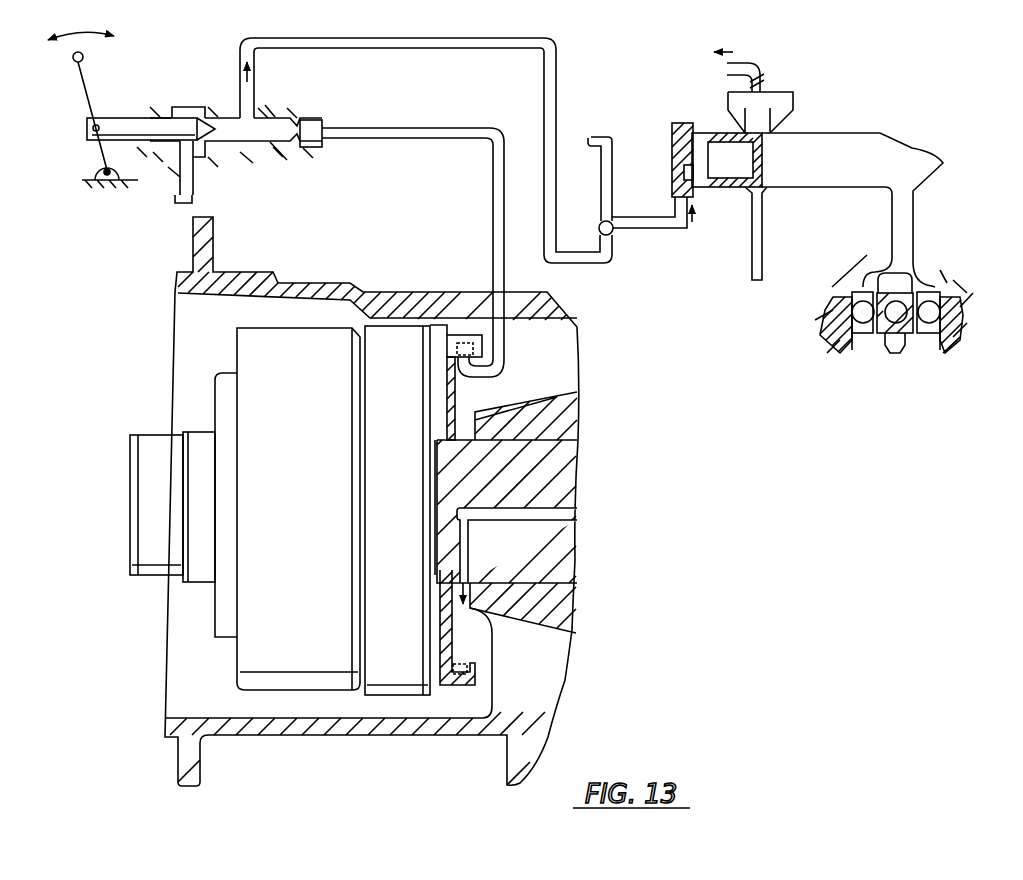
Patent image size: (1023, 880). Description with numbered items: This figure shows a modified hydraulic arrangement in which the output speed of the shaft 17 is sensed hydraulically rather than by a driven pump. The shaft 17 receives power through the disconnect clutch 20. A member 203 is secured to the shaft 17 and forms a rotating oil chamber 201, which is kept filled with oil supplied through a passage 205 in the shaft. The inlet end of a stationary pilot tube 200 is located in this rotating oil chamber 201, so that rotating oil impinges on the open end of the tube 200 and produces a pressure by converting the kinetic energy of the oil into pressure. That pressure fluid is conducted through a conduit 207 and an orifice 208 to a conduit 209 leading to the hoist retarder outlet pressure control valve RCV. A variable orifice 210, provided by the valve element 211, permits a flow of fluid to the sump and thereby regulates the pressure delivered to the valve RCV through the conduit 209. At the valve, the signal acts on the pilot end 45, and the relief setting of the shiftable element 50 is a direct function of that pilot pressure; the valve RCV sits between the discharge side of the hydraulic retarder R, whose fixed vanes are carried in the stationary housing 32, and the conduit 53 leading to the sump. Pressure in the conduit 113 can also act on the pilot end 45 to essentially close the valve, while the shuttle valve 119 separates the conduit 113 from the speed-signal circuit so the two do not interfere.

The disconnect clutch 20 is at (289, 688).
The shaft 17 is at (528, 484).
The stationary housing 32 is at (967, 303).
The pilot end 45 is at (672, 147).
The shiftable element 50 is at (722, 131).
The conduit 53 is at (745, 63).
The conduit 113 is at (606, 136).
The shuttle valve 119 is at (612, 232).
The stationary pilot tube 200 is at (465, 336).
The rotating oil chamber 201 is at (462, 665).
The member 203 is at (462, 396).
The passage 205 is at (566, 517).
The conduit 207 is at (493, 195).
The orifice 208 is at (315, 121).
The conduit 209 is at (256, 100).
The variable orifice 210 is at (218, 137).
The valve element 211 is at (198, 117).
The hoist retarder outlet pressure control valve RCV is at (713, 112).
The hydraulic retarder R is at (917, 266).